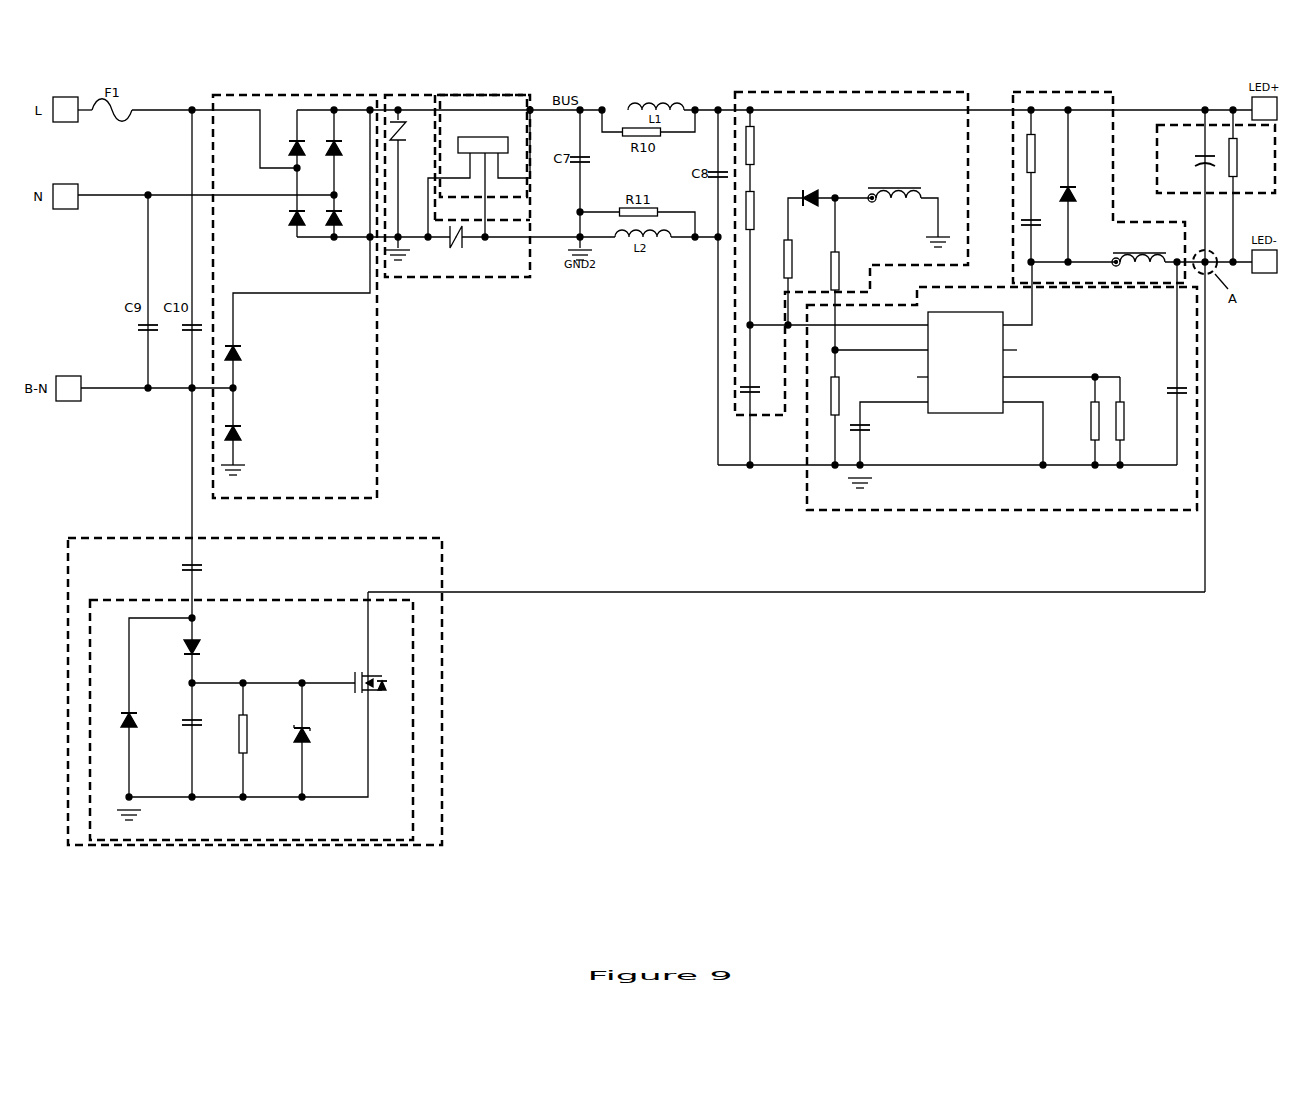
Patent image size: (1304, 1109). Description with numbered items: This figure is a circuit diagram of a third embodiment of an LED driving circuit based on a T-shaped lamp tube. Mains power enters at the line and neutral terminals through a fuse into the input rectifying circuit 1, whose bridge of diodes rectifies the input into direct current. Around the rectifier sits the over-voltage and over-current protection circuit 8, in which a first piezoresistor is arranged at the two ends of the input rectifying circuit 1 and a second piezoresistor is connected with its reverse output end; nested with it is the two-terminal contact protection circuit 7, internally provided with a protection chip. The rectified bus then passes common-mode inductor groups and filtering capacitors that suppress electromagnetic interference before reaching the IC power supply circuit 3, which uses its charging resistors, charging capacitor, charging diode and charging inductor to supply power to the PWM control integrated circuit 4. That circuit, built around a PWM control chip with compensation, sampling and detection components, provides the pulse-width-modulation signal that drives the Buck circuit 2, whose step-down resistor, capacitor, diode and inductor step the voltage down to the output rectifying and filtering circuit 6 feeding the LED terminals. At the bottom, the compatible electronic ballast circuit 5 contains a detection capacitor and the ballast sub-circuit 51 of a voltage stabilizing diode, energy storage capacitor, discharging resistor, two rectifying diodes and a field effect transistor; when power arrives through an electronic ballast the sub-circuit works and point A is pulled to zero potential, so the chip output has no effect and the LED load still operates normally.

The input rectifying circuit 1 is at (290, 96).
The Buck circuit 2 is at (1053, 93).
The IC power supply circuit 3 is at (855, 93).
The PWM control integrated circuit 4 is at (968, 511).
The compatible electronic ballast circuit 5 is at (444, 557).
The ballast sub-circuit 51 is at (262, 598).
The output rectifying and filtering circuit 6 is at (1155, 149).
The two-terminal contact protection circuit 7 is at (486, 96).
The over-voltage and over-current protection circuit 8 is at (396, 96).